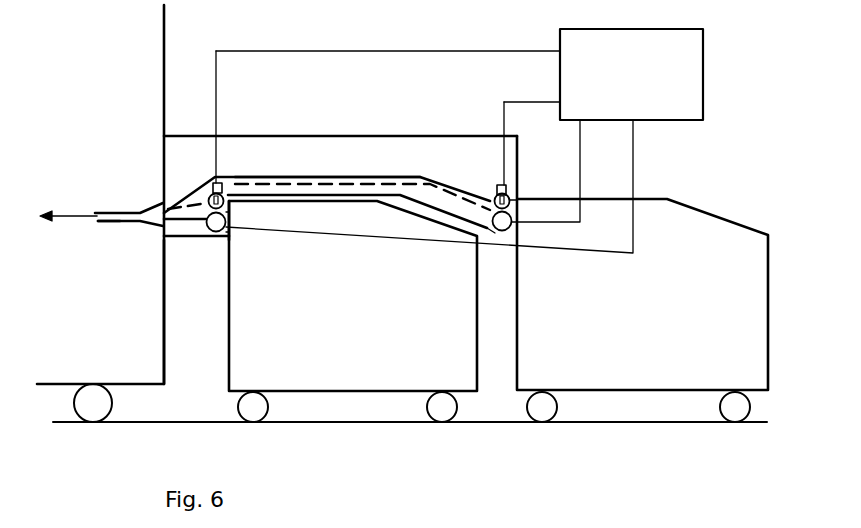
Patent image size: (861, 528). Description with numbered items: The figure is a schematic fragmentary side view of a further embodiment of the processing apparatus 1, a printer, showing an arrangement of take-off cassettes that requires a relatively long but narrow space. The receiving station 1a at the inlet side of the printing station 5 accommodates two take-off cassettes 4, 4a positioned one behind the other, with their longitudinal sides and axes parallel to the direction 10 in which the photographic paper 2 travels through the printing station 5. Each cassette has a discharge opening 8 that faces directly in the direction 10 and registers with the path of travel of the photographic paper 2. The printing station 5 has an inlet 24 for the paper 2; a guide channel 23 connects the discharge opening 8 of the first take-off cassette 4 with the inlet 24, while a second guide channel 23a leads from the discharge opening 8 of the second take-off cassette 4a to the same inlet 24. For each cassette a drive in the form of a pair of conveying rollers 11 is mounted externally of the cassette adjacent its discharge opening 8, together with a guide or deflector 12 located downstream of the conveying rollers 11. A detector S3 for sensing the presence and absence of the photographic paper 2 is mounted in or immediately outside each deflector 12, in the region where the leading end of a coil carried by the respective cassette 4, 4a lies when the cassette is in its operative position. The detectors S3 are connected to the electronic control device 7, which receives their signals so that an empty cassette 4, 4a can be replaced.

The apparatus 1 is at (157, 59).
The receiving station 1a is at (163, 258).
The photographic paper 2 is at (308, 183).
The take-off cassette 4 is at (345, 370).
The take-off cassette 4a is at (658, 363).
The printing station 5 is at (94, 193).
The electronic control device 7 is at (700, 84).
The discharge opening 8 is at (230, 242).
The direction 10 is at (73, 218).
The conveying rollers 11 is at (207, 217).
The deflector 12 is at (293, 190).
The guide channel 23 is at (161, 238).
The second guide channel 23a is at (378, 175).
The inlet 24 is at (110, 222).
The detector S3 is at (216, 182).